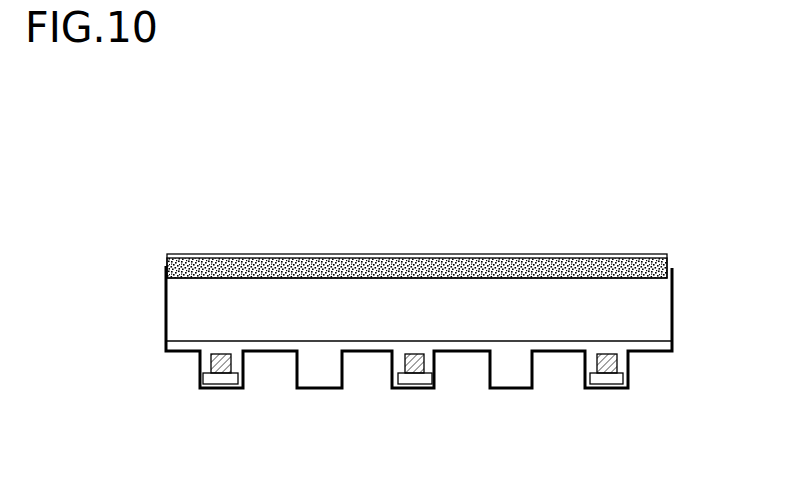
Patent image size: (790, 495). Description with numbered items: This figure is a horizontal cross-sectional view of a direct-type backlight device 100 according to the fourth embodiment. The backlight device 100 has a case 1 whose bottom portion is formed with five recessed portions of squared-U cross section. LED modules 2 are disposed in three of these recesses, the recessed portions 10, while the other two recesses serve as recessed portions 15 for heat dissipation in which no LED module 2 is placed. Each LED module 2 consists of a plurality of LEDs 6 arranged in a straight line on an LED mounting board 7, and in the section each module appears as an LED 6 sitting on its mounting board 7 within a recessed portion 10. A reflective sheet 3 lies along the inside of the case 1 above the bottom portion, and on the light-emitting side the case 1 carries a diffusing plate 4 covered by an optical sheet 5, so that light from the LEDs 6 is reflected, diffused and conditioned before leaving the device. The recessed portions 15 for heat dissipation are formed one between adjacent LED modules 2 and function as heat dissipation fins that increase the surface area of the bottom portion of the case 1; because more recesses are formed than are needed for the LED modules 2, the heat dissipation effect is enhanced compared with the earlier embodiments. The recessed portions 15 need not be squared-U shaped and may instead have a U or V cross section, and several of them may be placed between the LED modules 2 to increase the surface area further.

The backlight device 100 is at (690, 300).
The case 1 is at (165, 313).
The LED module 2 is at (213, 350).
The reflective sheet 3 is at (548, 338).
The diffusing plate 4 is at (272, 274).
The optical sheet 5 is at (227, 254).
The LED 6 is at (617, 365).
The LED mounting board 7 is at (610, 380).
The recessed portion 10 is at (313, 393).
The recessed portion for heat dissipation 15 is at (512, 393).